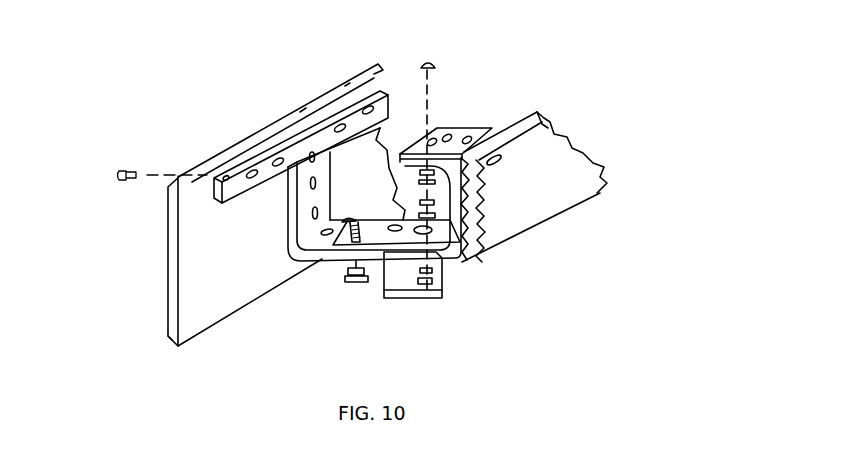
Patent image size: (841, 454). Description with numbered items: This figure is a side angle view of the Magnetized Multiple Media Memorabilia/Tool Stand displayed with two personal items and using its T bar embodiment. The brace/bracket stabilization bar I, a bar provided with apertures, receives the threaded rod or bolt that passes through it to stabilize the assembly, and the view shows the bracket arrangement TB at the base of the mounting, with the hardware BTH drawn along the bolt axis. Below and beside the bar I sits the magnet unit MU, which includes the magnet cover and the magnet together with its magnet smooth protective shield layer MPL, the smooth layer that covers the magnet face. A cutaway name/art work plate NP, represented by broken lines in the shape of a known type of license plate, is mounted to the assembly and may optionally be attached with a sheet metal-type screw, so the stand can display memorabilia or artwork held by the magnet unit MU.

The name/art work plate NP is at (225, 308).
The bracket TB is at (322, 258).
The brace/bracket stabilization bar I is at (457, 128).
The magnet unit MU is at (442, 267).
The magnet smooth protective shield layer MPL is at (450, 296).
The through bolt BTH is at (428, 56).